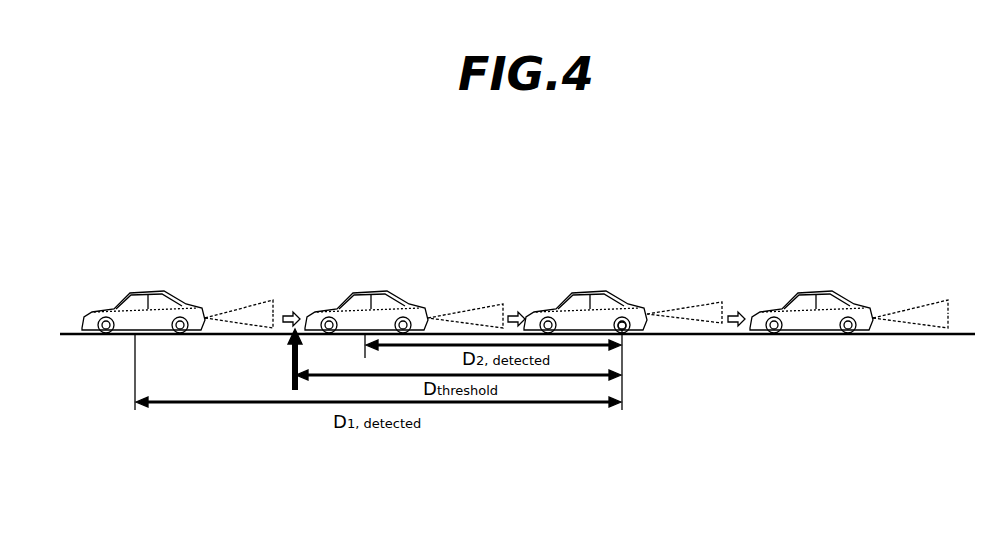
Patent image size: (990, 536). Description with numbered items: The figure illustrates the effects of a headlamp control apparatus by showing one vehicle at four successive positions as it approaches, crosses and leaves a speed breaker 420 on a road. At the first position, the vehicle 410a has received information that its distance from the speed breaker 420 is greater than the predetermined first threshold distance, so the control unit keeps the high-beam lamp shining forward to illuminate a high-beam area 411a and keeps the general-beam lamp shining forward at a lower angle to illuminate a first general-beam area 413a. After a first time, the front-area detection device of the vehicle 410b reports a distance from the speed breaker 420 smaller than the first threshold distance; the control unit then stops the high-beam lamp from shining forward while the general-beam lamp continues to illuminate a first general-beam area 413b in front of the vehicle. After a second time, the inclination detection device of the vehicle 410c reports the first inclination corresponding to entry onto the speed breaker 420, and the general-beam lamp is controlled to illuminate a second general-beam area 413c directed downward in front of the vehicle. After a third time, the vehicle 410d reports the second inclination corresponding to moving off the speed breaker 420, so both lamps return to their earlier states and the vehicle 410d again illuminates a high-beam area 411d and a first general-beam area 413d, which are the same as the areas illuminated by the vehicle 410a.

The vehicle 410a is at (135, 292).
The high-beam area 411a is at (248, 301).
The first general-beam area 413a is at (258, 333).
The vehicle 410b is at (362, 292).
The first general-beam area 413b is at (478, 310).
The vehicle 410c is at (582, 291).
The second general-beam area 413c is at (673, 303).
The speed breaker 420 is at (625, 333).
The vehicle 410d is at (798, 291).
The high-beam area 411d is at (922, 301).
The first general-beam area 413d is at (930, 333).